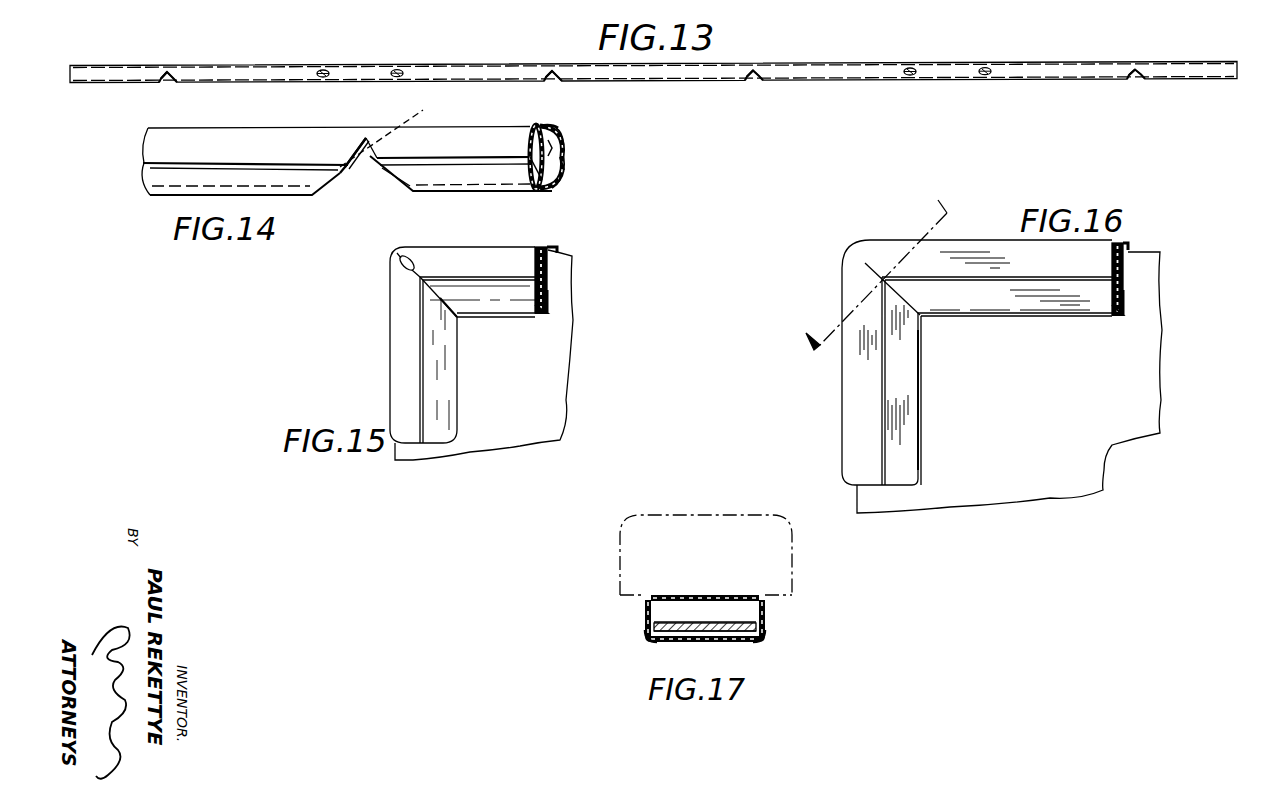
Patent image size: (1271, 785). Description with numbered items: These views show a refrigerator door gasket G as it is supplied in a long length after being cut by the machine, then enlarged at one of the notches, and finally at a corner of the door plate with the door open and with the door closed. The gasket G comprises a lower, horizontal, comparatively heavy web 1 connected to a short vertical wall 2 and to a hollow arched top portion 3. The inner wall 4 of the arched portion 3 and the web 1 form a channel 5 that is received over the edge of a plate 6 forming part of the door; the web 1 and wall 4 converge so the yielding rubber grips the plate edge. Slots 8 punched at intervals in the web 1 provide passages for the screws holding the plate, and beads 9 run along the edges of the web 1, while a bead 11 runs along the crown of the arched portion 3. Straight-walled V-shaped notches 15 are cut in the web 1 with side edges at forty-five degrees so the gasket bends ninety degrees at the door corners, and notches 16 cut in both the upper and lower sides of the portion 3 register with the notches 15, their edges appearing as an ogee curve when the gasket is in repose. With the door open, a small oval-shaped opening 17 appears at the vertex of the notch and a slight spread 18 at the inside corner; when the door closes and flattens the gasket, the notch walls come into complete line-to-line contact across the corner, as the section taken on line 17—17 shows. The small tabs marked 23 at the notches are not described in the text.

In FIG. 14, the web 1 is at (560, 153).
In FIG. 15, the web 1 is at (552, 251).
In FIG. 16, the web 1 is at (1130, 250).
In FIG. 17, the web 1 is at (733, 639).
In FIG. 14, the short vertical wall 2 is at (556, 127).
In FIG. 15, the short vertical wall 2 is at (552, 249).
In FIG. 16, the short vertical wall 2 is at (1124, 244).
In FIG. 17, the short vertical wall 2 is at (766, 630).
In FIG. 14, the hollow arched top portion 3 is at (533, 186).
In FIG. 15, the hollow arched top portion 3 is at (536, 309).
In FIG. 16, the hollow arched top portion 3 is at (1112, 305).
In FIG. 17, the hollow arched top portion 3 is at (730, 596).
In FIG. 14, the inner wall 4 is at (565, 167).
In FIG. 15, the inner wall 4 is at (549, 297).
In FIG. 16, the inner wall 4 is at (1125, 292).
In FIG. 17, the inner wall 4 is at (664, 622).
In FIG. 14, the channel 5 is at (560, 148).
In FIG. 17, the channel 5 is at (648, 628).
In FIG. 15, the plate 6 is at (563, 326).
In FIG. 16, the plate 6 is at (1138, 337).
In FIG. 17, the plate 6 is at (768, 619).
In FIG. 13, the slots 8 is at (327, 70).
In FIG. 14, the beads 9 is at (562, 134).
In FIG. 17, the beads 9 is at (650, 638).
In FIG. 14, the bead 11 is at (456, 172).
In FIG. 15, the bead 11 is at (475, 279).
In FIG. 16, the bead 11 is at (880, 421).
In FIG. 14, the V-shaped notches 15 is at (390, 130).
In FIG. 13, the notches 16 is at (167, 72).
In FIG. 14, the notches 16 is at (341, 172).
In FIG. 15, the oval-shaped opening 17 is at (405, 268).
In FIG. 16, the oval-shaped opening 17 is at (870, 267).
In FIG. 15, the spread 18 is at (459, 318).
In FIG. 13, the notch 23 is at (167, 72).
In FIG. 14, the notch 23 is at (366, 138).
In FIG. 13, the gasket G is at (872, 80).
In FIG. 16, the gasket G is at (921, 371).